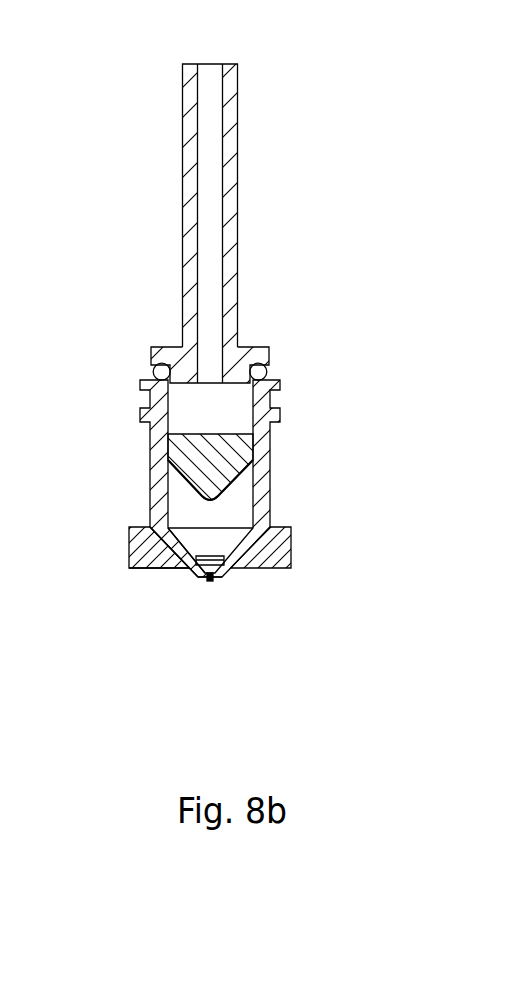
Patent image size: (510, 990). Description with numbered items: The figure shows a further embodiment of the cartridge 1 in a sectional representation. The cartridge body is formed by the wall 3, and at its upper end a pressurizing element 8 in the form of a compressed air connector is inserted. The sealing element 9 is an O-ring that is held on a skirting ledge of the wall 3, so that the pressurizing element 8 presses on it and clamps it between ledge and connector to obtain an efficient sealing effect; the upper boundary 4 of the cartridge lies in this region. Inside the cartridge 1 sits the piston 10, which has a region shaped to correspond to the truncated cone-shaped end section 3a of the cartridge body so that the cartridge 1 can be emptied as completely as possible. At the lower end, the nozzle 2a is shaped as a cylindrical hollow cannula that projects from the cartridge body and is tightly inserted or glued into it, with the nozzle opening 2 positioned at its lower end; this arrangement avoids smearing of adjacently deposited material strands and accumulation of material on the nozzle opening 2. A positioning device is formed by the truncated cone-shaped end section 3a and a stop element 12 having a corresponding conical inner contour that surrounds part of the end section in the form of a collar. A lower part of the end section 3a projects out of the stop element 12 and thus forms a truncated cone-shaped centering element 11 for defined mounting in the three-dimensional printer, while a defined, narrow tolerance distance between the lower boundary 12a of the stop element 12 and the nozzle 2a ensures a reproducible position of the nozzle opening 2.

The cartridge 1 is at (216, 397).
The nozzle opening 2 is at (209, 579).
The nozzle 2a is at (213, 578).
The wall 3 is at (158, 463).
The truncated cone-shaped end section 3a is at (152, 522).
The upper boundary 4 is at (278, 382).
The pressurizing element 8 is at (230, 232).
The sealing element 9 is at (266, 366).
The piston 10 is at (240, 444).
The truncated cone-shaped centering element 11 is at (198, 569).
The stop element 12 is at (282, 547).
The lower boundary 12a is at (160, 568).